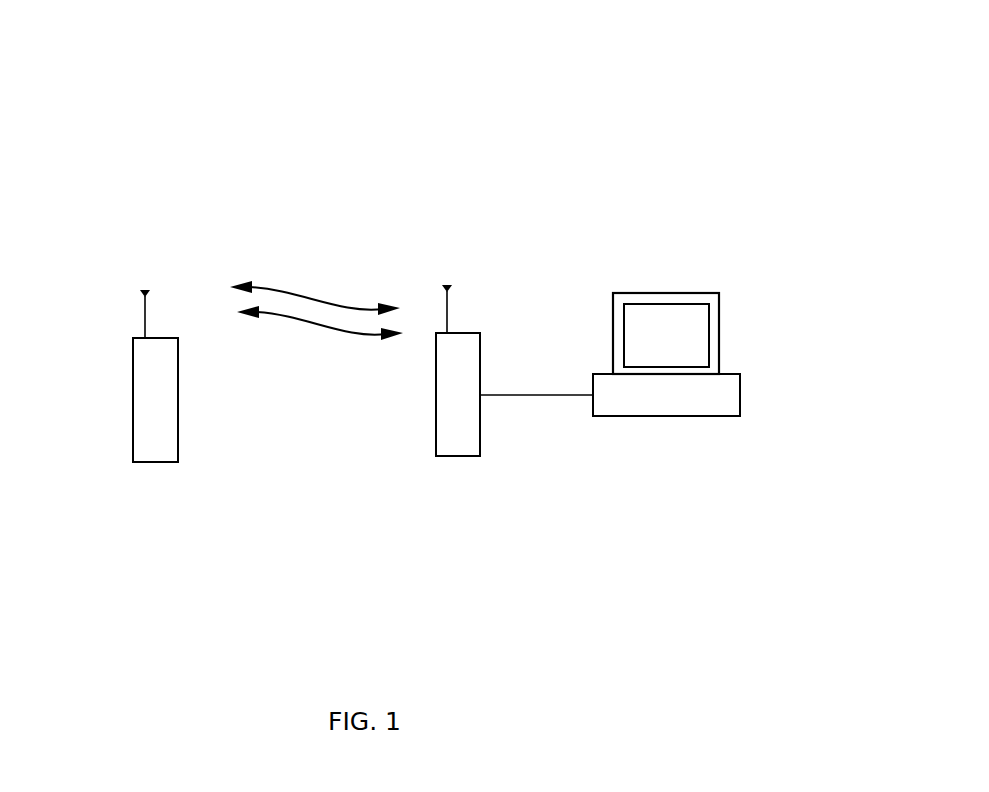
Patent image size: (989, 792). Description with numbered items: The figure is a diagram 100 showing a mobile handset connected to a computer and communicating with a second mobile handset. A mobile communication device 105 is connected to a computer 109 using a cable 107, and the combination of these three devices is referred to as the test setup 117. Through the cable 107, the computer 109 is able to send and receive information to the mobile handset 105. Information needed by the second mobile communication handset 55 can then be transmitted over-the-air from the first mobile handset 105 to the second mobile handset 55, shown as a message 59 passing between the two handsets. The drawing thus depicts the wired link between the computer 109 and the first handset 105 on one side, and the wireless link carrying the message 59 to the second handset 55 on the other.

The diagram 100 is at (210, 56).
The second mobile communication handset 55 is at (178, 432).
The message 59 is at (300, 297).
The test setup 117 is at (555, 254).
The mobile communication device 105 is at (463, 457).
The cable 107 is at (512, 395).
The computer 109 is at (740, 374).